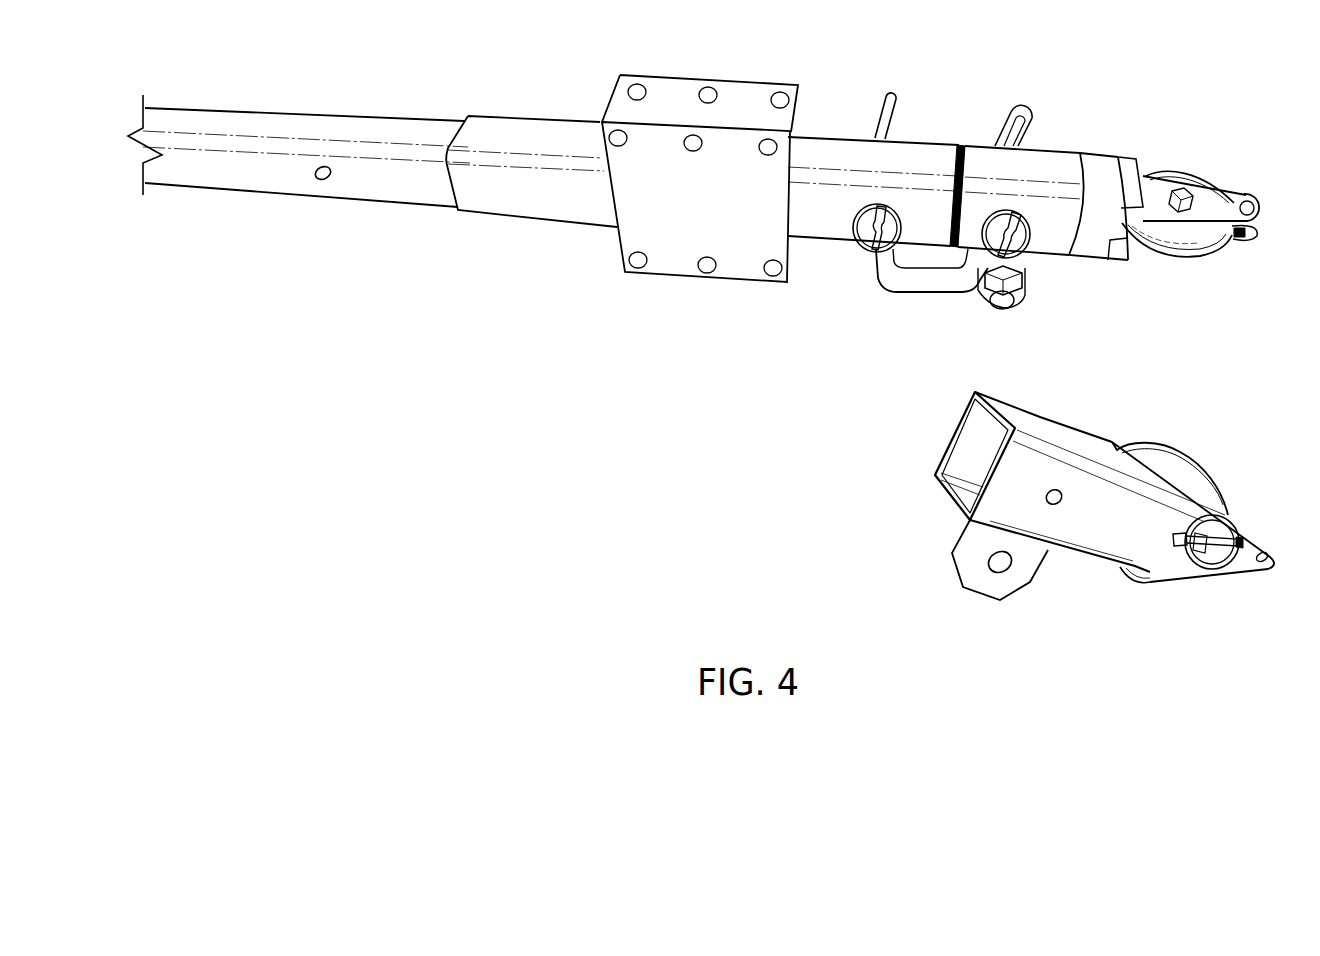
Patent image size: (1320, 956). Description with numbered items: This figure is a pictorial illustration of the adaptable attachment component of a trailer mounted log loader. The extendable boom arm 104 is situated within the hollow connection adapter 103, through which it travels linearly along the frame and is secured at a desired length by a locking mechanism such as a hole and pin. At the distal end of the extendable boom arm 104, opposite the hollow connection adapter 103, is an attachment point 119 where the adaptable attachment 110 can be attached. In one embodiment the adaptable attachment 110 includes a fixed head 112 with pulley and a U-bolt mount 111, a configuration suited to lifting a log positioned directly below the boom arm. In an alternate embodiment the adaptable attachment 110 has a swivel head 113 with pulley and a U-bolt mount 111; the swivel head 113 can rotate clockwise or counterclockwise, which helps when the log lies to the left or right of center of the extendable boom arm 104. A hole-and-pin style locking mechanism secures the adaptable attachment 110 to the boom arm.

The hollow connection adapter 103 is at (822, 157).
The extendable boom arm 104 is at (237, 127).
The adaptable attachment 110 is at (1104, 435).
The U-bolt mount 111 is at (1028, 565).
The fixed head with pulley 112 is at (1078, 488).
The swivel head with pulley 113 is at (1052, 168).
The attachment point 119 is at (970, 301).